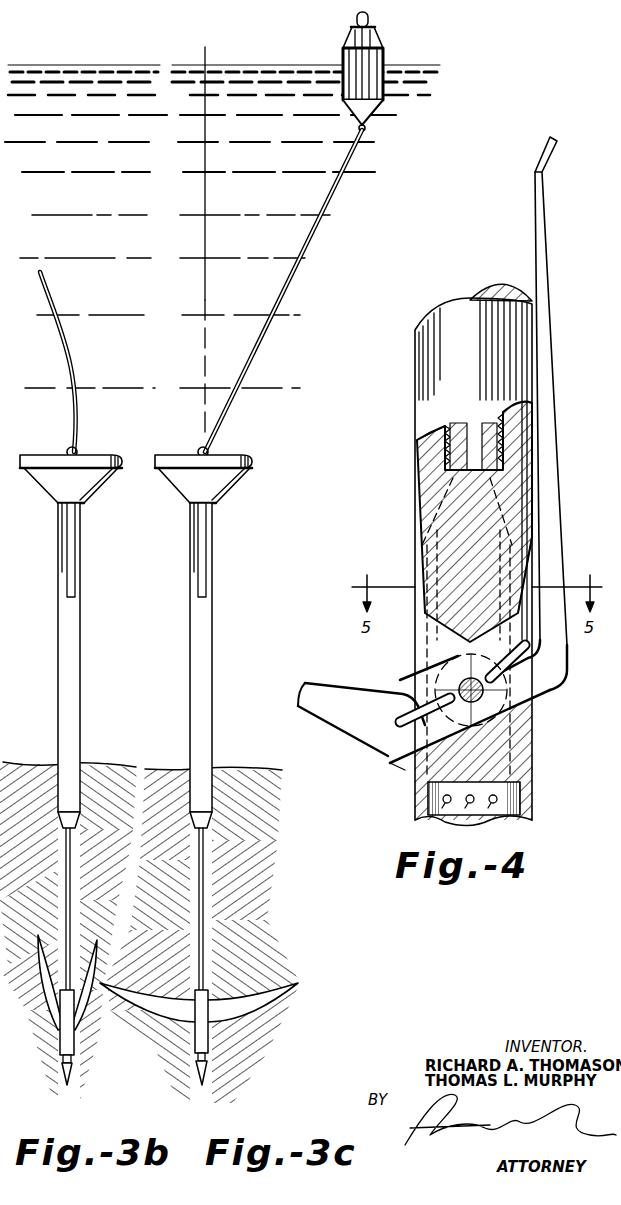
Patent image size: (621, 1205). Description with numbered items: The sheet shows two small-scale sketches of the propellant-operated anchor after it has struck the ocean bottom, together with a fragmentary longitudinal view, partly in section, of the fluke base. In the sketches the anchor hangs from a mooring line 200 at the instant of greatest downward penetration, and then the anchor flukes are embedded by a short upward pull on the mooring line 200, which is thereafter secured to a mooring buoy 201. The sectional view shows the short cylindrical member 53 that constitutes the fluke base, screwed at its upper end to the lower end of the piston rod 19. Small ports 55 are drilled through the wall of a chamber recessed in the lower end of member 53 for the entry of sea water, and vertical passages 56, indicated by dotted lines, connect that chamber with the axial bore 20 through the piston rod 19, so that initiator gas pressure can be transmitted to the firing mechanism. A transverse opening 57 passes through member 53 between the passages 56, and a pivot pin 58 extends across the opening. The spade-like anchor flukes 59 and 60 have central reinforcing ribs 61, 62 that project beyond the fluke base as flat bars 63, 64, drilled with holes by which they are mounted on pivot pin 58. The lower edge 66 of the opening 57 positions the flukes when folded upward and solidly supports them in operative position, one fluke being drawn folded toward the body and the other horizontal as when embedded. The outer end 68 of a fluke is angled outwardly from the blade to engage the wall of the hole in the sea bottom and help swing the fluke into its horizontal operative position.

In FIG. 3b, the mooring line 200 is at (70, 350).
In FIG. 3c, the mooring line 200 is at (332, 199).
In FIG. 3c, the mooring buoy 201 is at (343, 80).
In FIG. 4, the piston rod 19 is at (418, 432).
In FIG. 4, the axial bore 20 is at (432, 428).
In FIG. 4, the vertical passages 56 is at (448, 497).
In FIG. 4, the central reinforcing rib 62 is at (532, 570).
In FIG. 4, the outer end of fluke 68 is at (552, 152).
In FIG. 4, the flat bar 63 is at (553, 688).
In FIG. 4, the central reinforcing rib 61 is at (402, 688).
In FIG. 4, the flat bar 64 is at (392, 762).
In FIG. 4, the anchor fluke 59 is at (350, 743).
In FIG. 4, the anchor fluke 60 is at (537, 698).
In FIG. 4, the pivot pin 58 is at (462, 681).
In FIG. 4, the transverse opening 57 is at (527, 733).
In FIG. 4, the lower edge of opening 66 is at (505, 743).
In FIG. 4, the cylindrical member (fluke base) 53 is at (528, 786).
In FIG. 4, the ports 55 is at (494, 806).